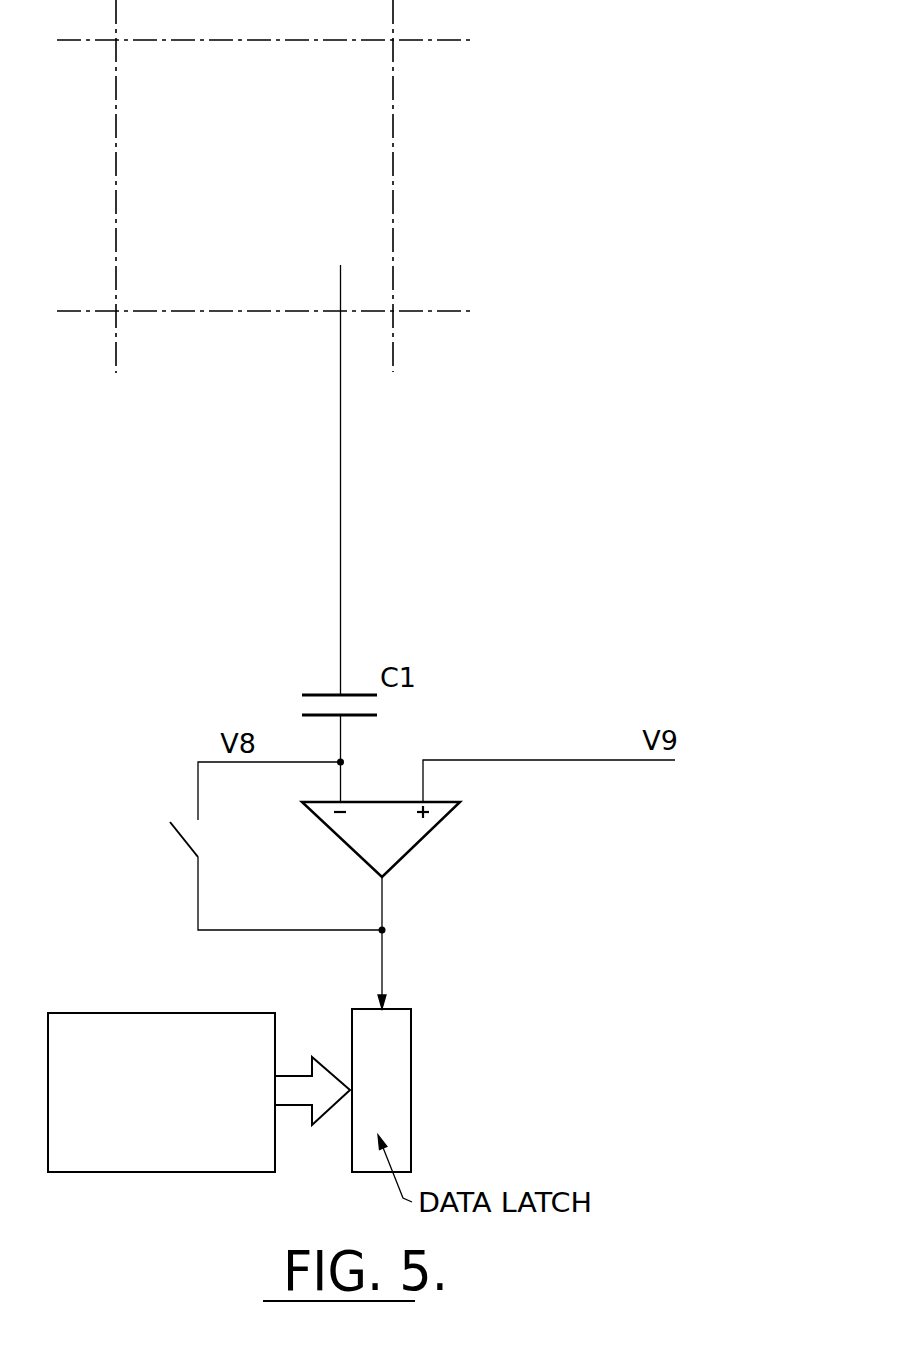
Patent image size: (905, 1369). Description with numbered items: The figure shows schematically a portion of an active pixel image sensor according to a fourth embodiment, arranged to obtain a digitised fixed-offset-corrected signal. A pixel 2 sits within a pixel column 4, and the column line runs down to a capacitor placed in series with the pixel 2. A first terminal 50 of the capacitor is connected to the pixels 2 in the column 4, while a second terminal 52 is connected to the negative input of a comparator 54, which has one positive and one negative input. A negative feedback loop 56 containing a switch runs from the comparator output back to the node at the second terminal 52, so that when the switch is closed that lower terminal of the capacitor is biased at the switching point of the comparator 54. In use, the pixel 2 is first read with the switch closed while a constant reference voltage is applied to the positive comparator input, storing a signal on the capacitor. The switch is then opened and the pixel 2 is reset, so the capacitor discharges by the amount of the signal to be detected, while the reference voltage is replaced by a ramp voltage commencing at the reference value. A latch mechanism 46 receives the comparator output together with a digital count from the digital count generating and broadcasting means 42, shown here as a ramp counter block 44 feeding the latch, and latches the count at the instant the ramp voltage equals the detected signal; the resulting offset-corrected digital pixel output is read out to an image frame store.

The pixel 2 is at (271, 186).
The pixel column 4 is at (366, 480).
The first terminal 50 is at (314, 672).
The second terminal 52 is at (375, 731).
The comparator 54 is at (425, 839).
The negative feedback loop 56 is at (256, 850).
The ramp counter 44 is at (149, 1115).
The digital count generating and broadcasting means 42 is at (318, 1139).
The latch mechanism 46 is at (411, 1090).